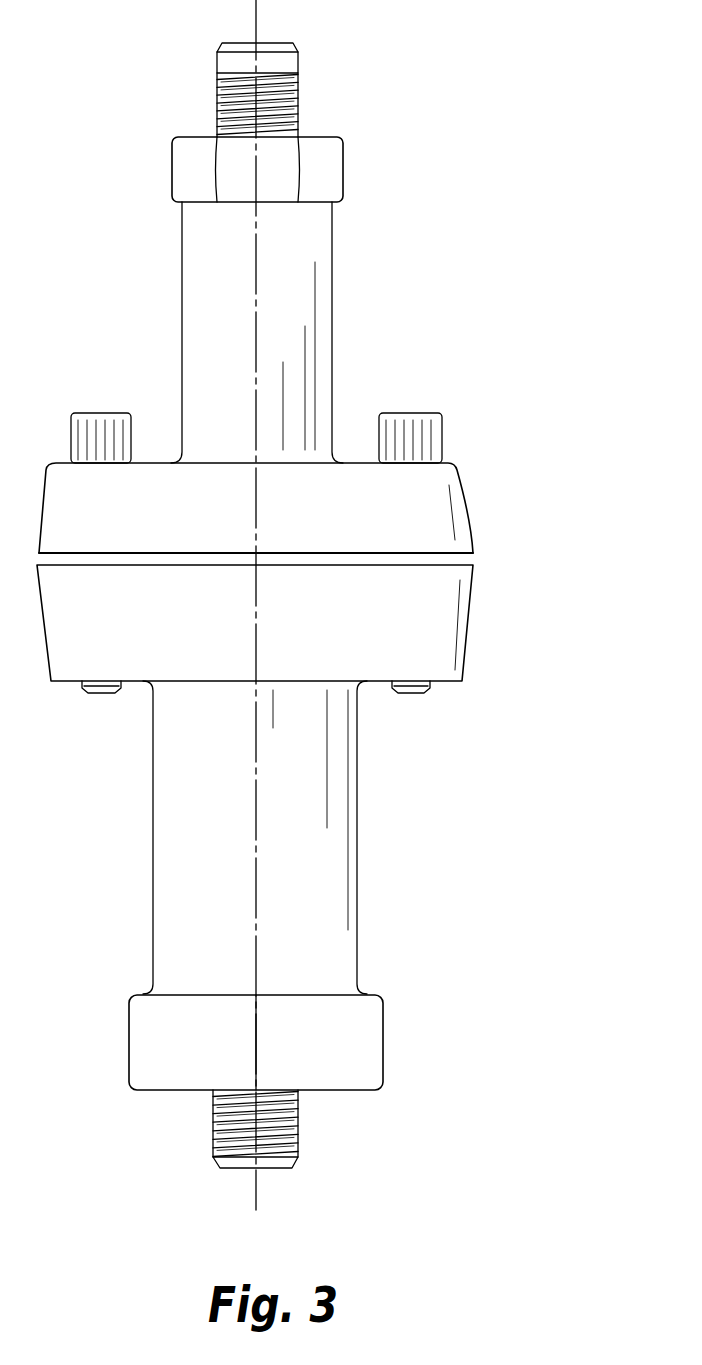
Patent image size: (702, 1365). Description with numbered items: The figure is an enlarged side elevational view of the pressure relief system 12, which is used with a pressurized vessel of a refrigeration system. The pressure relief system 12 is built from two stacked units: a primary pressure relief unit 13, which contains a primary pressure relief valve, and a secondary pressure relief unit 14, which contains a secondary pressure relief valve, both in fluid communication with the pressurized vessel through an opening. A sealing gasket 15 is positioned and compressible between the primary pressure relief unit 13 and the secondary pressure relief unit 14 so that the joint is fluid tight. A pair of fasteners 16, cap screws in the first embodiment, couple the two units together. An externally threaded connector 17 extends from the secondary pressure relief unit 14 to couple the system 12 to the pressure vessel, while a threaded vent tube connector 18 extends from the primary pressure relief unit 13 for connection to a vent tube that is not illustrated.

The pressure relief system 12 is at (465, 226).
The primary pressure relief unit 13 is at (318, 350).
The secondary pressure relief unit 14 is at (330, 847).
The sealing gasket 15 is at (473, 553).
The fasteners 16 is at (108, 413).
The externally threaded connector 17 is at (272, 1160).
The threaded vent tube connector 18 is at (303, 59).